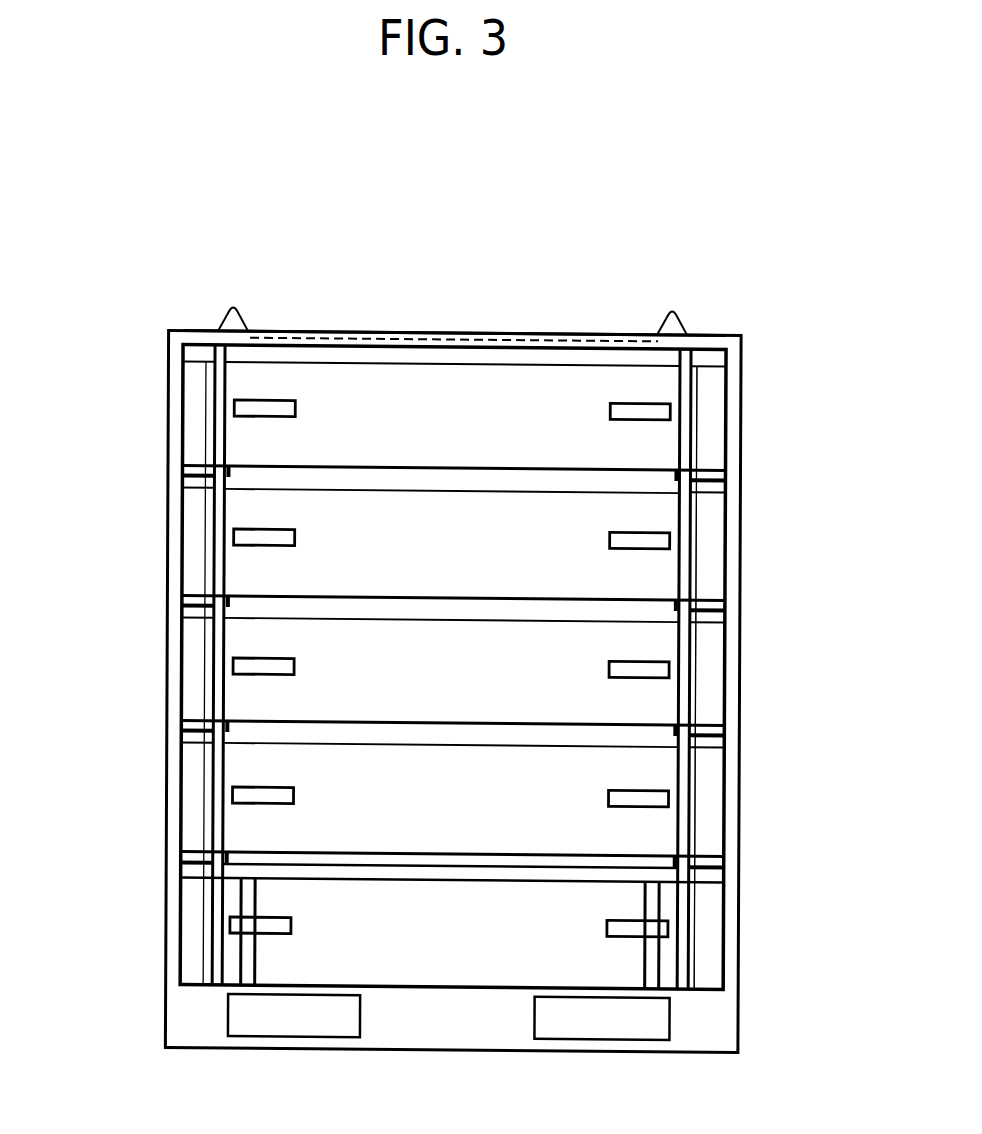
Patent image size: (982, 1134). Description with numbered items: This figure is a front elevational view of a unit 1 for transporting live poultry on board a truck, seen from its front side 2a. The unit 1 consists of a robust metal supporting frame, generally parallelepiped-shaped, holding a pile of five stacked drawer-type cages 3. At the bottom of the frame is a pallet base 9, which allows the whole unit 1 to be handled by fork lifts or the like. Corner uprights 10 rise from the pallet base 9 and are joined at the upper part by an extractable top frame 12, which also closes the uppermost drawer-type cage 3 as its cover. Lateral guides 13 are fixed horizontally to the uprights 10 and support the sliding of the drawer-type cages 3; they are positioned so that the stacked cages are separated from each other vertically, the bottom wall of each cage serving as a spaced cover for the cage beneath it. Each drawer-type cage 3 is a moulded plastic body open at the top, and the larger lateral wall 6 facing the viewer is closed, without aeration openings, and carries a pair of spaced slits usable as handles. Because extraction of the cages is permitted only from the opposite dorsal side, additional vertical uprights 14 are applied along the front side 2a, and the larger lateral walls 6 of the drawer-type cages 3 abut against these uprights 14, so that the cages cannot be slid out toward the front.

The unit 1 is at (177, 201).
The front side 2a is at (433, 333).
The drawer-type cage 3 is at (702, 417).
The larger lateral wall 6 is at (370, 383).
The pallet base 9 is at (415, 1022).
The corner upright 10 is at (165, 450).
The top frame 12 is at (503, 337).
The lateral guide 13 is at (203, 474).
The additional vertical upright 14 is at (220, 435).